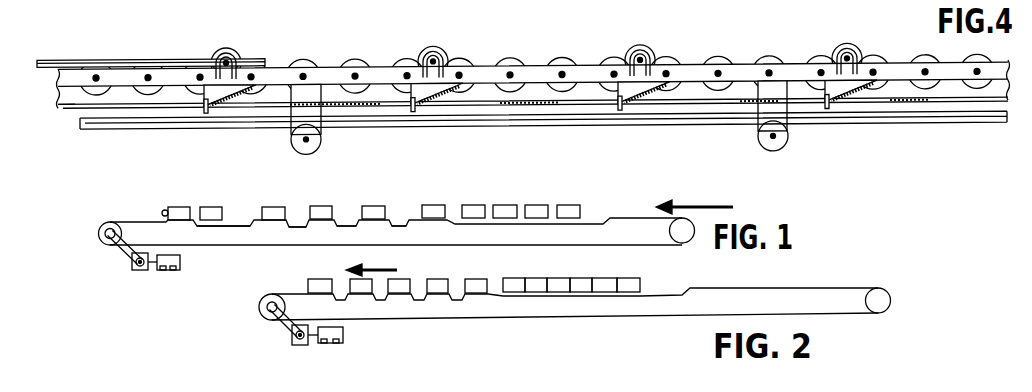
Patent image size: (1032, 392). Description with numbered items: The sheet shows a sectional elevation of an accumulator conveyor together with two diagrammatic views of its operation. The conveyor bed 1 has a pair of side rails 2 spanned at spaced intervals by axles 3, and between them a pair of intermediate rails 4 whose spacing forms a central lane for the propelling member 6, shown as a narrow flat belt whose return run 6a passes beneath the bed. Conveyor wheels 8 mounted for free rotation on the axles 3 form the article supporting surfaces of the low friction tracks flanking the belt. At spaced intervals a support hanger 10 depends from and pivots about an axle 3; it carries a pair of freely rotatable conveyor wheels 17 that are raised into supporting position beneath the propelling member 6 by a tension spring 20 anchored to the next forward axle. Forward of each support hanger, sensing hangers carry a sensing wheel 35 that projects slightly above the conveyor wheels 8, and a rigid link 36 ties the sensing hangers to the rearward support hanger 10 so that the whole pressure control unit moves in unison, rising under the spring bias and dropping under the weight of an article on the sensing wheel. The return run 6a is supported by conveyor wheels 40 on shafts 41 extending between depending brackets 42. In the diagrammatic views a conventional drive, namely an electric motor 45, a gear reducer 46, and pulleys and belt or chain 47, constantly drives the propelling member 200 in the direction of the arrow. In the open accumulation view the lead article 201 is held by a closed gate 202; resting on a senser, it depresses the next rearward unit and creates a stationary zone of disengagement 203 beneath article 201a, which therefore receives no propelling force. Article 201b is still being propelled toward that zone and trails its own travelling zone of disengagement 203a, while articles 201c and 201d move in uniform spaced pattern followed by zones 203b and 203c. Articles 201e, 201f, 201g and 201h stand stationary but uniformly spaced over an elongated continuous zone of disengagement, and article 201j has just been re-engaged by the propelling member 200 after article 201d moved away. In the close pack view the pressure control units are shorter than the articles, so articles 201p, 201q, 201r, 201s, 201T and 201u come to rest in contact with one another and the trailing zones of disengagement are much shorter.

In FIG. 4, the conveyor bed 1 is at (782, 56).
In FIG. 4, the side rails 2 is at (68, 102).
In FIG. 4, the axles 3 is at (147, 77).
In FIG. 4, the intermediate rails 4 is at (67, 78).
In FIG. 4, the propelling member 6 is at (65, 61).
In FIG. 4, the return run 6a is at (942, 126).
In FIG. 4, the conveyor wheels 8 is at (97, 90).
In FIG. 4, the support hanger 10 is at (213, 89).
In FIG. 4, the conveyor wheels 17 is at (239, 67).
In FIG. 4, the tension spring 20 is at (438, 91).
In FIG. 4, the sensing wheel 35 is at (222, 57).
In FIG. 4, the link 36 is at (255, 117).
In FIG. 4, the conveyor wheels 40 is at (320, 150).
In FIG. 4, the shafts 41 is at (305, 143).
In FIG. 4, the depending brackets 42 is at (323, 134).
In FIG. 1, the electric motor 45 is at (172, 270).
In FIG. 2, the electric motor 45 is at (344, 335).
In FIG. 1, the gear reducer 46 is at (138, 270).
In FIG. 2, the gear reducer 46 is at (306, 345).
In FIG. 1, the pulleys and belt or chain 47 is at (122, 258).
In FIG. 2, the pulleys and belt or chain 47 is at (283, 327).
In FIG. 1, the propelling member 200 is at (637, 217).
In FIG. 2, the propelling member 200 is at (575, 287).
In FIG. 1, the lead article 201 is at (180, 212).
In FIG. 1, the article 201a is at (210, 215).
In FIG. 1, the article 201b is at (280, 215).
In FIG. 1, the article 201c is at (322, 213).
In FIG. 1, the article 201d is at (379, 220).
In FIG. 1, the article 201e is at (470, 212).
In FIG. 1, the article 201f is at (503, 212).
In FIG. 1, the article 201g is at (540, 212).
In FIG. 1, the article 201h is at (575, 211).
In FIG. 1, the article 201j is at (430, 210).
In FIG. 2, the article 201p is at (512, 279).
In FIG. 2, the article 201q is at (545, 279).
In FIG. 2, the article 201r is at (558, 293).
In FIG. 2, the article 201s is at (581, 293).
In FIG. 2, the article 201T is at (612, 278).
In FIG. 2, the article 201u is at (637, 280).
In FIG. 1, the closed gate 202 is at (162, 212).
In FIG. 1, the zone of disengagement 203 is at (215, 228).
In FIG. 1, the zone of disengagement 203a is at (296, 229).
In FIG. 1, the zone of disengagement 203b is at (345, 228).
In FIG. 1, the zone of disengagement 203c is at (403, 226).